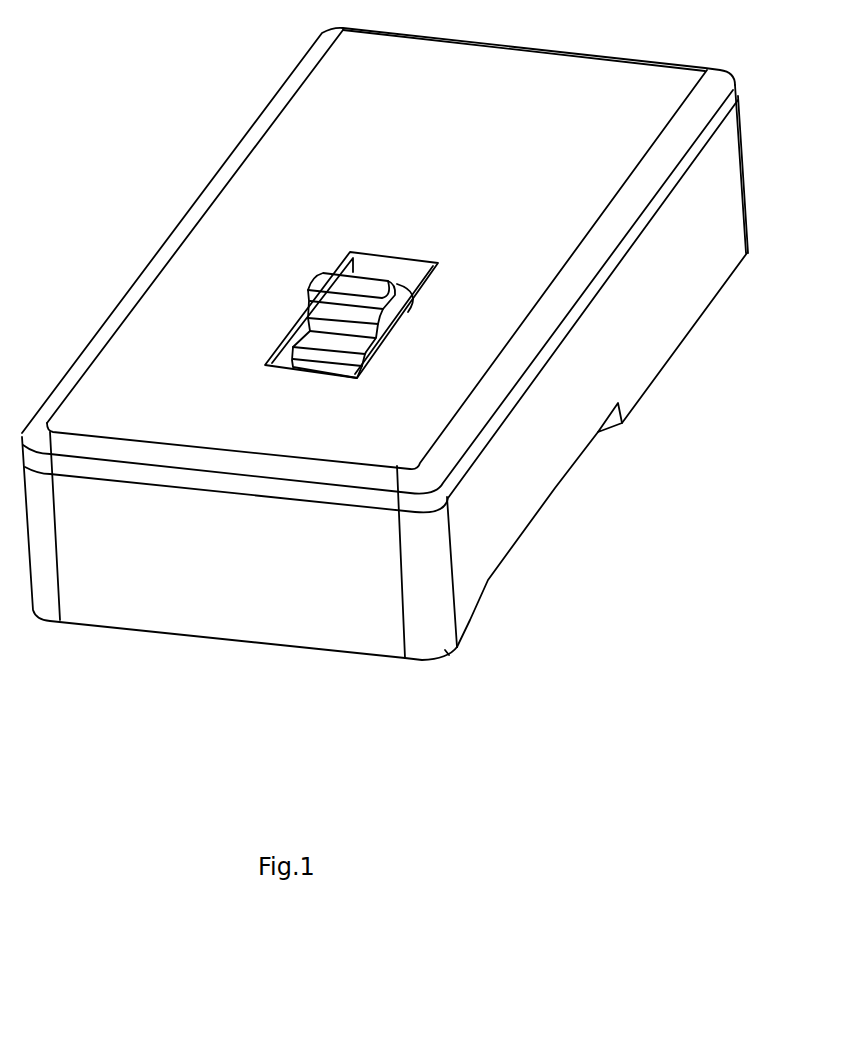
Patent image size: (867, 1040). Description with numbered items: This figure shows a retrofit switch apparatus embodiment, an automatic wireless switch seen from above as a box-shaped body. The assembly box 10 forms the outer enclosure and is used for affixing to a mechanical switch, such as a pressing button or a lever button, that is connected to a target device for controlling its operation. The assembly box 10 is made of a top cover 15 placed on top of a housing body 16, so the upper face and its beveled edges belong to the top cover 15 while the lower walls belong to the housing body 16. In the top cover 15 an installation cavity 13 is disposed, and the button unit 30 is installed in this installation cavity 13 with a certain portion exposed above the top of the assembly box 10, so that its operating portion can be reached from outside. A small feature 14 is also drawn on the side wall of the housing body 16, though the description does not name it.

The assembly box 10 is at (385, 395).
The installation cavity 13 is at (362, 269).
The engaging protrusion 14 is at (562, 498).
The top cover 15 is at (155, 425).
The housing body 16 is at (188, 608).
The button unit 30 is at (308, 298).